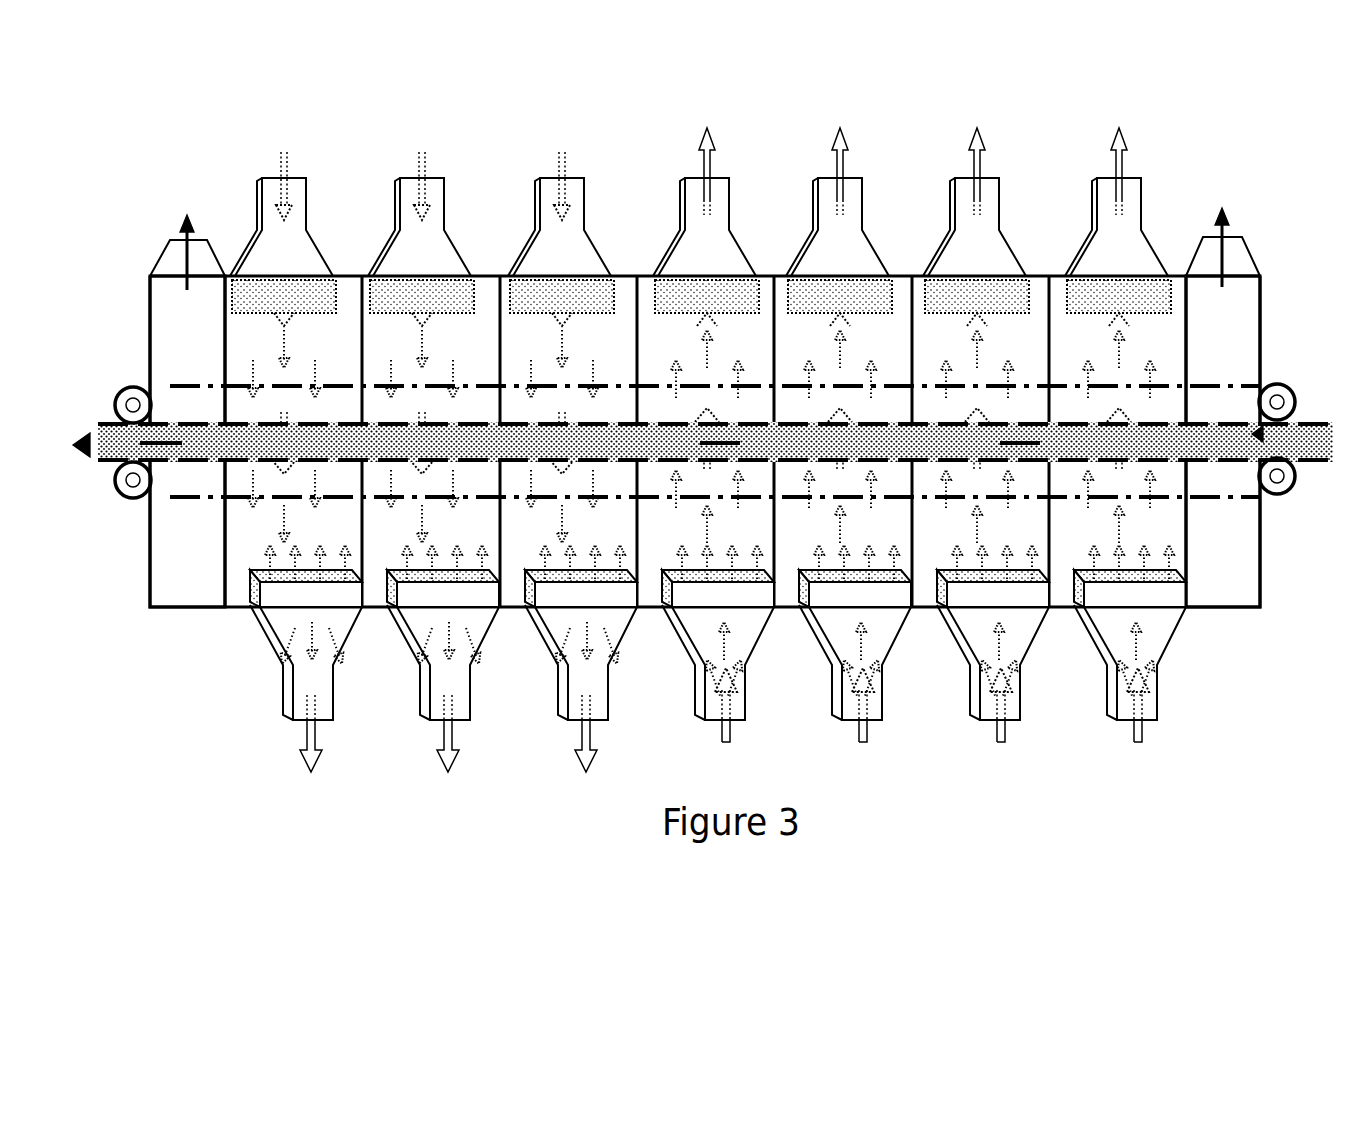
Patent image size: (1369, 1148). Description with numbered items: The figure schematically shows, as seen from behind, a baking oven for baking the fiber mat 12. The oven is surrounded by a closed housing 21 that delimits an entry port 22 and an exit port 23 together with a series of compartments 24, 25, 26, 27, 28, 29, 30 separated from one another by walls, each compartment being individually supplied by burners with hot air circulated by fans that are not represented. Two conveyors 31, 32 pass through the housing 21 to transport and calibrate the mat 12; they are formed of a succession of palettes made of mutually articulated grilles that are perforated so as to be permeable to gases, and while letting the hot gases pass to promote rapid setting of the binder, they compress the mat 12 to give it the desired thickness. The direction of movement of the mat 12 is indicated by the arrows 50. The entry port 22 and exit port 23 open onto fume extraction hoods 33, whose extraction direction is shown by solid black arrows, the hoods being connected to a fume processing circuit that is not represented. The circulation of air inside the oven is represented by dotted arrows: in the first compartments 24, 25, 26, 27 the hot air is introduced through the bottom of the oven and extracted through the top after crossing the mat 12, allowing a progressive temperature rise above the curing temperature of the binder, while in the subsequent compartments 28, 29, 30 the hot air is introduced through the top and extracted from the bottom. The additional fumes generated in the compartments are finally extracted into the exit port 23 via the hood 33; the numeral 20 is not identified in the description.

The mat 12 is at (1175, 197).
The drying section with modules 20 is at (383, 773).
The closed housing 21 is at (1260, 292).
The entry port 22 is at (1244, 555).
The exit port 23 is at (205, 573).
The compartment 24 is at (1100, 358).
The compartment 25 is at (963, 358).
The compartment 26 is at (825, 358).
The compartment 27 is at (688, 358).
The compartment 28 is at (550, 358).
The compartment 29 is at (412, 358).
The compartment 30 is at (275, 358).
The conveyor 31 is at (133, 498).
The conveyor 32 is at (133, 387).
The fume extraction hood 33 is at (177, 267).
The arrows indicating direction of movement of the mat 50 is at (98, 460).